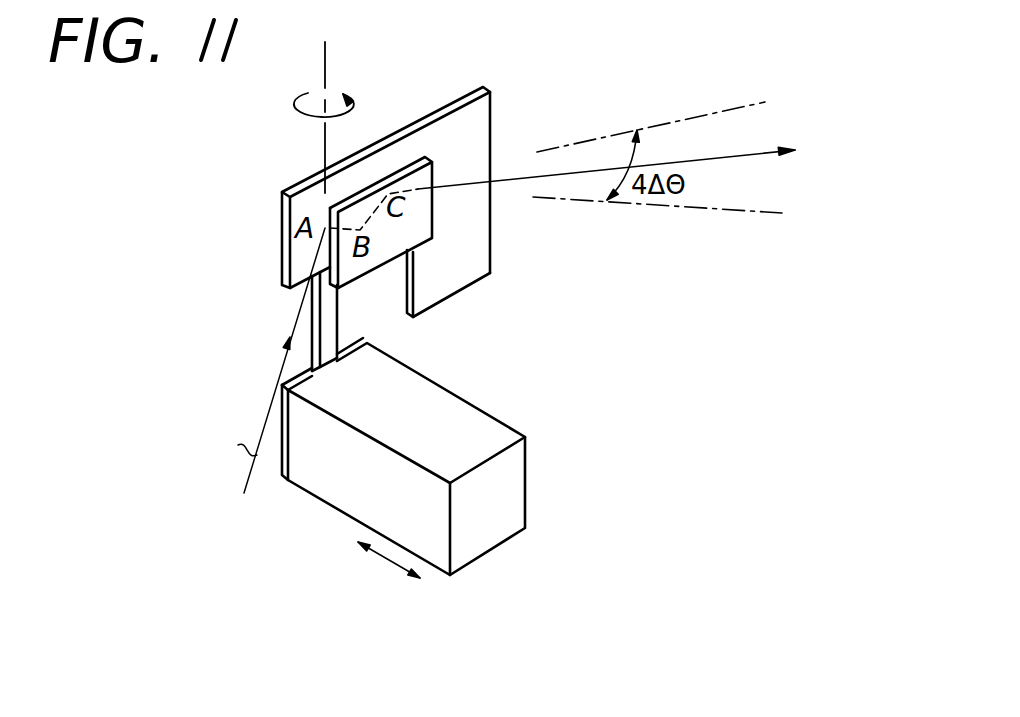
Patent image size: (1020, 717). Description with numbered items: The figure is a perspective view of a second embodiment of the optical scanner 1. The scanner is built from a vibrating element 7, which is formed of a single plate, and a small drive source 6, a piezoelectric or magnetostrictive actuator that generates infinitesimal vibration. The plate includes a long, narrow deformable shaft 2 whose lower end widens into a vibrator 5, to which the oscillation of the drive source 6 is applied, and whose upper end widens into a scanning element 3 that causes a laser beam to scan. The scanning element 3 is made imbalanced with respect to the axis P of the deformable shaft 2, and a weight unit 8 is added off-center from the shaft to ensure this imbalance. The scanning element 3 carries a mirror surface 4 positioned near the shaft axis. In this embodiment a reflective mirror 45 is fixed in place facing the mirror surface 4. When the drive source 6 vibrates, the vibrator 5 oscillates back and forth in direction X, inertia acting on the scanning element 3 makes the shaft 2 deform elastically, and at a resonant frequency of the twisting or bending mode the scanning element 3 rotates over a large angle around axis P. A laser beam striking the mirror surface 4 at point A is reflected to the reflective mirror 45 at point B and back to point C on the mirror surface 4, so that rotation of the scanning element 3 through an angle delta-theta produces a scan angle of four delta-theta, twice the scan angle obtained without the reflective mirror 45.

The optical scanner 1 is at (273, 332).
The deformable shaft 2 is at (340, 328).
The scanning element 3 is at (483, 243).
The mirror surface 4 is at (365, 183).
The vibrator 5 is at (292, 452).
The drive source 6 is at (503, 493).
The vibrating element 7 is at (279, 234).
The weight unit 8 is at (452, 283).
The reflective mirror 45 is at (423, 217).